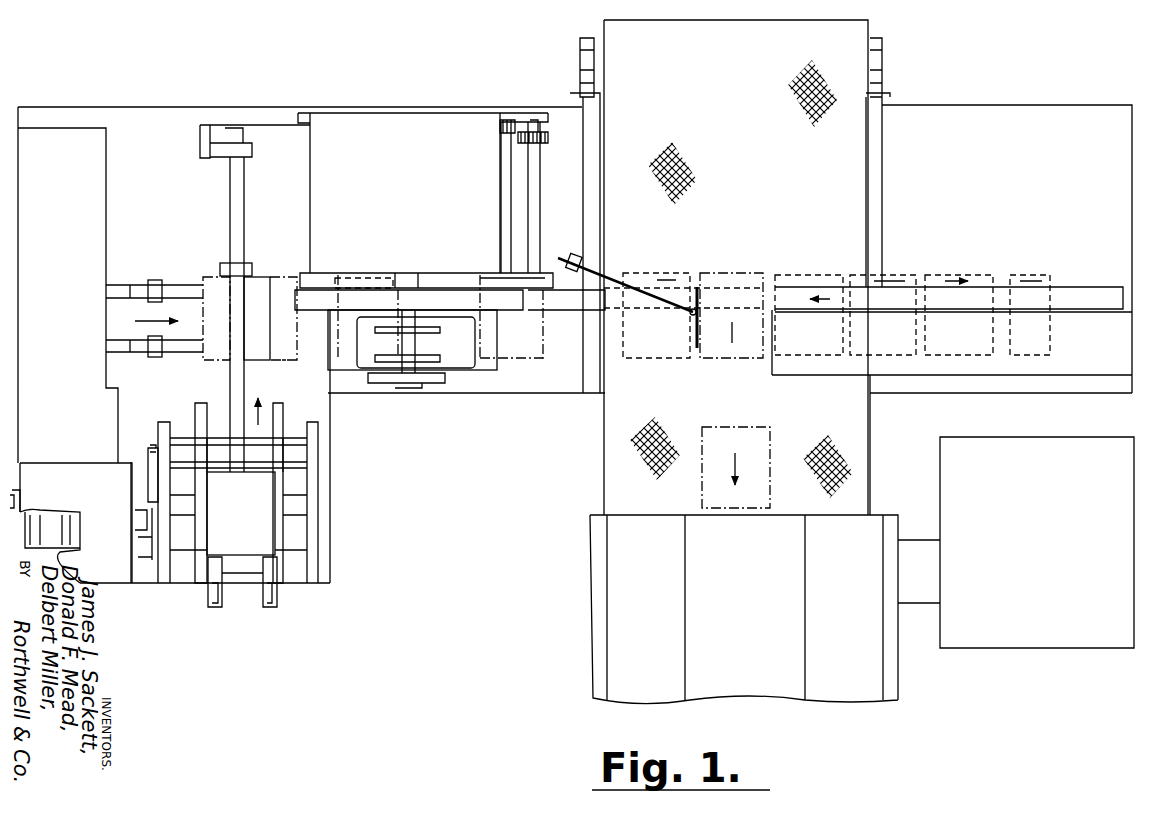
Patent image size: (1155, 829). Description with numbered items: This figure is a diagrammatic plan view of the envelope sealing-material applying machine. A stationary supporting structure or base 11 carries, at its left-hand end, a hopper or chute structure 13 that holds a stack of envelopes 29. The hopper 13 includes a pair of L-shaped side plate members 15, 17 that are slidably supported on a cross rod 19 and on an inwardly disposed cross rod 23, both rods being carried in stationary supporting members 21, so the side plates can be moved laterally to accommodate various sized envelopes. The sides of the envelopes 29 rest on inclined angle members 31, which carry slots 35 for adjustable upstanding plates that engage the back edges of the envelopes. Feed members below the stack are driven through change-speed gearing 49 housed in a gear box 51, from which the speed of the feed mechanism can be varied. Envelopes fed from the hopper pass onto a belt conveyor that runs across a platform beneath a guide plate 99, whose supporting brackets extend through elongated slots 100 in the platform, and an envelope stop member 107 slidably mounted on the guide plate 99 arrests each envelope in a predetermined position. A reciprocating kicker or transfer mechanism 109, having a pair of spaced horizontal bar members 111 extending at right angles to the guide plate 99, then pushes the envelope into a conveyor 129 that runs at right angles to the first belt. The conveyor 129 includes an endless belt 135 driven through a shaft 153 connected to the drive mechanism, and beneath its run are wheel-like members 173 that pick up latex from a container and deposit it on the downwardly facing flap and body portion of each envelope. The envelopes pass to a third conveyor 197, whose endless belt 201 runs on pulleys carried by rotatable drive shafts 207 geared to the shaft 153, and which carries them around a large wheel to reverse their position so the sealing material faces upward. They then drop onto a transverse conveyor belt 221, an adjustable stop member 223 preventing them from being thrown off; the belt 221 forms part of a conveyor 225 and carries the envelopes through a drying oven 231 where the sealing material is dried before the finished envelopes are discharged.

The stationary supporting structure or base 11 is at (337, 575).
The hopper or chute structure 13 is at (282, 560).
The side plate member 15 is at (280, 412).
The side plate member 17 is at (197, 410).
The cross rod 19 is at (246, 576).
The stationary supporting members 21 is at (316, 530).
The cross rod 23 is at (306, 512).
The envelopes 29 is at (258, 276).
The inclined angle members 31 is at (212, 602).
The slots 35 is at (207, 593).
The gearing 49 is at (70, 522).
The gear box 51 is at (82, 490).
The guide plate 99 is at (244, 218).
The elongated slots 100 is at (268, 128).
The envelope stop member 107 is at (222, 266).
The reciprocating kicker or transfer mechanism 109 is at (122, 354).
The bar members 111 is at (186, 283).
The conveyor 129 is at (377, 282).
The endless belt 135 is at (433, 290).
The shaft 153 is at (501, 174).
The wheel-like members 173 is at (432, 335).
The third conveyor 197 is at (567, 306).
The endless belt 201 is at (1062, 287).
The rotatable drive shafts 207 is at (535, 184).
The conveyor belt 221 is at (845, 38).
The adjustable stop member 223 is at (697, 288).
The conveyor 225 is at (856, 204).
The drying oven 231 is at (880, 675).